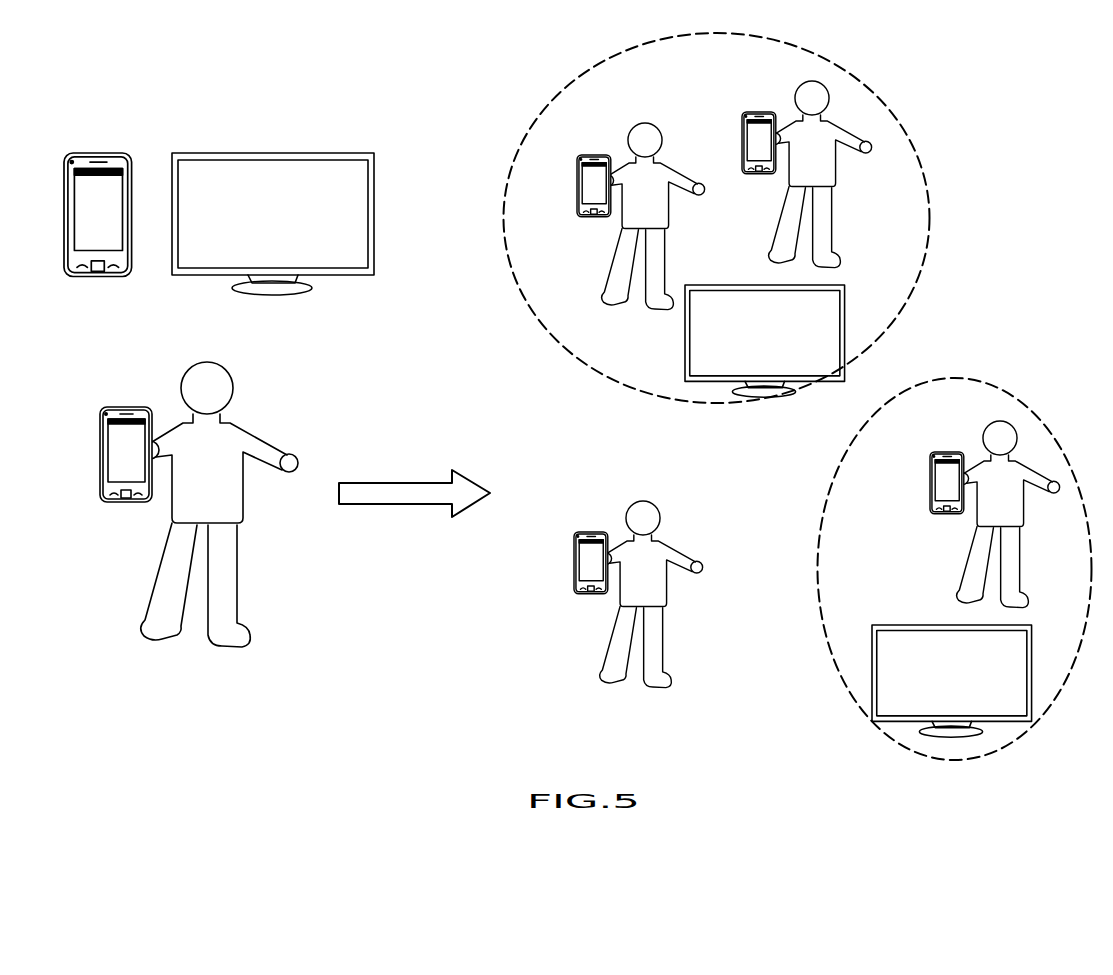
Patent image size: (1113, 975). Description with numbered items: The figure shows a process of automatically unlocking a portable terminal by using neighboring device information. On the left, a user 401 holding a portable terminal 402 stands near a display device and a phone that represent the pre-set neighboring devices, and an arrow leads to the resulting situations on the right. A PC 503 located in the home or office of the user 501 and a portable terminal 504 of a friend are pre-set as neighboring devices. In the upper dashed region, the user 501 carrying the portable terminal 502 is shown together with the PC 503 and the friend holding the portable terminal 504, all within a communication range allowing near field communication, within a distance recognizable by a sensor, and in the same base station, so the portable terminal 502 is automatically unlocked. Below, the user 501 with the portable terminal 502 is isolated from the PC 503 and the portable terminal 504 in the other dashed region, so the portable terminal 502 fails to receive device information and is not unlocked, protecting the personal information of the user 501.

The user 401 is at (290, 455).
The portable terminal 402 is at (122, 407).
The user 501 is at (697, 182).
The portable terminal 502 is at (590, 155).
The PC 503 is at (333, 153).
The portable terminal of a friend 504 is at (114, 153).